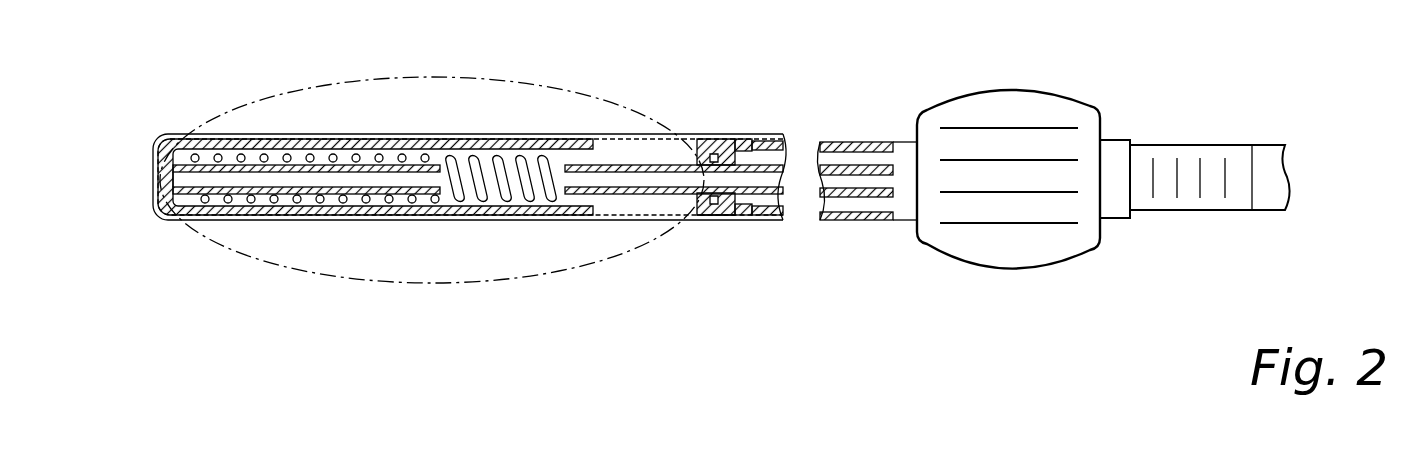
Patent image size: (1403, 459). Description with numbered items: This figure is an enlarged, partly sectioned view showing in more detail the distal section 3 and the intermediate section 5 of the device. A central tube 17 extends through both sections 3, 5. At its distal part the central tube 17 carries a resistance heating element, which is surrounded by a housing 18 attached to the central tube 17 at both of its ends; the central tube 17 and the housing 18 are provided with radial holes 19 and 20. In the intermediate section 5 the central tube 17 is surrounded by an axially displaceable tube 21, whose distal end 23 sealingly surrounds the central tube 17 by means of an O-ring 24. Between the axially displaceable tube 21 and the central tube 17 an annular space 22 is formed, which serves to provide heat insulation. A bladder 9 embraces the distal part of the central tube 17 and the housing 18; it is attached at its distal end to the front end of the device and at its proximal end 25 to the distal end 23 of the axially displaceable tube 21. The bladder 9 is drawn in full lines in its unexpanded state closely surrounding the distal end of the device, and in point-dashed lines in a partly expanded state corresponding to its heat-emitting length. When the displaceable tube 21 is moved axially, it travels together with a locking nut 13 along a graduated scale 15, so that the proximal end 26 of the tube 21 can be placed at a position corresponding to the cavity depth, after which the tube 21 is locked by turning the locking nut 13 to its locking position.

The distal section 3 is at (480, 101).
The intermediate section 5 is at (910, 97).
The bladder 9 is at (236, 134).
The locking nut 13 is at (1007, 110).
The scale 15 is at (1205, 186).
The central tube 17 is at (647, 164).
The housing 18 is at (384, 134).
The radial holes 19 is at (205, 134).
The radial holes 20 is at (214, 170).
The axially displaceable tube 21 is at (846, 142).
The annular space 22 is at (840, 204).
The distal end of axially displaceable tube 23 is at (748, 136).
The O-ring 24 is at (714, 158).
The proximal end of bladder 25 is at (718, 222).
The proximal end of tube 26 is at (1111, 202).